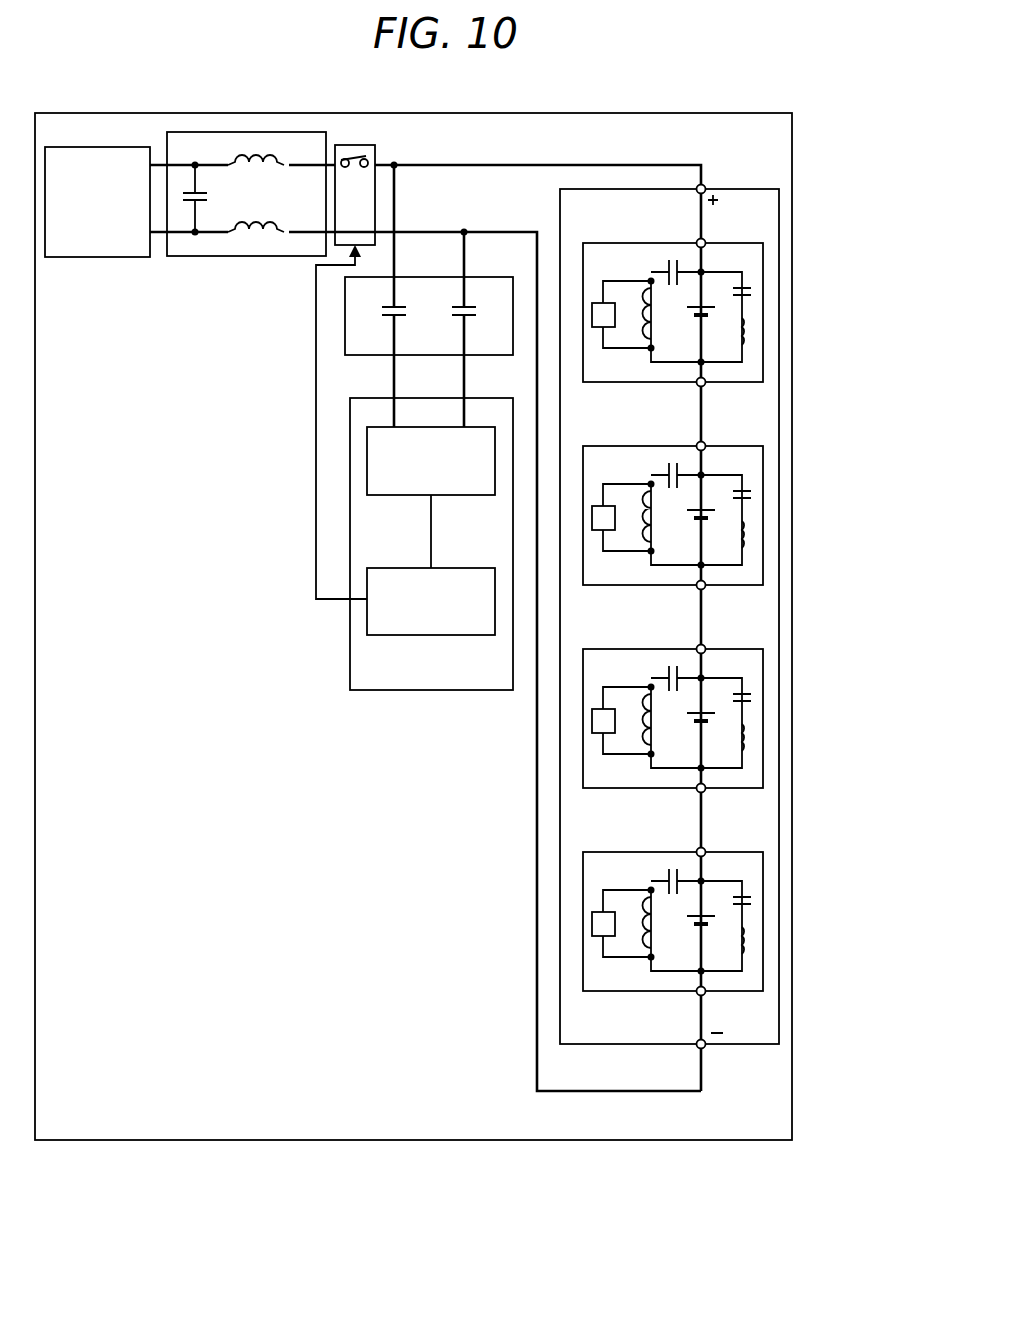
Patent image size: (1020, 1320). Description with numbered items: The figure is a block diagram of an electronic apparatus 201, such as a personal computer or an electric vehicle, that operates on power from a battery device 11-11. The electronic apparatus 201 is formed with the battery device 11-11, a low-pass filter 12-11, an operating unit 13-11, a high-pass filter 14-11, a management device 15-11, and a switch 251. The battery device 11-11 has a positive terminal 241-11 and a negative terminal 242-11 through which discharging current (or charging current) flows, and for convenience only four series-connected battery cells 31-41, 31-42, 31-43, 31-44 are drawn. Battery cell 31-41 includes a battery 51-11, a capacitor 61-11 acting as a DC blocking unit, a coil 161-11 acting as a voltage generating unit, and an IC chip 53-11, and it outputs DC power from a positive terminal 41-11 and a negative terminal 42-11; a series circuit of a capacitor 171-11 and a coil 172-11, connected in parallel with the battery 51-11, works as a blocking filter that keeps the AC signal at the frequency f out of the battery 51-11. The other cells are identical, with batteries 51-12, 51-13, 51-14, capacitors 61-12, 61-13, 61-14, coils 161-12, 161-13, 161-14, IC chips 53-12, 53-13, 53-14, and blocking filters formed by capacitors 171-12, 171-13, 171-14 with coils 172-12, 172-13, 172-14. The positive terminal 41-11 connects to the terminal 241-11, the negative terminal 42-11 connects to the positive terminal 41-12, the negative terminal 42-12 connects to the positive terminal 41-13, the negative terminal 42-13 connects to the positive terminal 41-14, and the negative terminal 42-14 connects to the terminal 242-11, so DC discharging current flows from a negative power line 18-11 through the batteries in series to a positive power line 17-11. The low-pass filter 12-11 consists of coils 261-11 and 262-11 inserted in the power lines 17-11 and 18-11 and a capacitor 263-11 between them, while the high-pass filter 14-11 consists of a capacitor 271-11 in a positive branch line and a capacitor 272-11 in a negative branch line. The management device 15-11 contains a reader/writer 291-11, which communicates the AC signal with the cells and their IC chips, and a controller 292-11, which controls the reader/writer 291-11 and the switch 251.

The electronic apparatus 201 is at (280, 1141).
The battery device 11-11 is at (620, 1044).
The low-pass filter 12-11 is at (245, 131).
The operating unit 13-11 is at (96, 258).
The high-pass filter 14-11 is at (428, 277).
The management device 15-11 is at (433, 690).
The positive power line 17-11 is at (557, 163).
The negative power line 18-11 is at (584, 1092).
The switch 251 is at (354, 145).
The coil 261-11 is at (250, 173).
The coil 262-11 is at (250, 238).
The capacitor 263-11 is at (189, 201).
The capacitor 271-11 is at (402, 318).
The capacitor 272-11 is at (472, 318).
The reader/writer 291-11 is at (367, 462).
The controller 292-11 is at (367, 618).
The positive terminal 241-11 is at (705, 186).
The negative terminal 242-11 is at (705, 1046).
The battery cell 31-41 is at (763, 258).
The battery cell 31-42 is at (716, 515).
The battery cell 31-43 is at (716, 718).
The battery cell 31-44 is at (716, 921).
The positive terminal 41-11 is at (715, 231).
The positive terminal 41-12 is at (728, 439).
The positive terminal 41-13 is at (728, 642).
The positive terminal 41-14 is at (728, 845).
The negative terminal 42-11 is at (696, 384).
The negative terminal 42-12 is at (669, 594).
The negative terminal 42-13 is at (669, 797).
The negative terminal 42-14 is at (669, 1000).
The battery 51-11 is at (714, 311).
The battery 51-12 is at (768, 515).
The battery 51-13 is at (768, 718).
The battery 51-14 is at (768, 921).
The IC chip 53-11 is at (603, 345).
The IC chip 53-12 is at (620, 531).
The IC chip 53-13 is at (620, 734).
The IC chip 53-14 is at (620, 937).
The capacitor 61-11 is at (665, 264).
The capacitor 61-12 is at (653, 469).
The capacitor 61-13 is at (653, 672).
The capacitor 61-14 is at (653, 875).
The coil 161-11 is at (657, 320).
The coil 161-12 is at (681, 518).
The coil 161-13 is at (681, 721).
The coil 161-14 is at (681, 924).
The capacitor 171-11 is at (752, 292).
The capacitor 171-12 is at (795, 488).
The capacitor 171-13 is at (795, 691).
The capacitor 171-14 is at (795, 894).
The coil 172-11 is at (751, 336).
The coil 172-12 is at (799, 536).
The coil 172-13 is at (799, 739).
The coil 172-14 is at (799, 942).